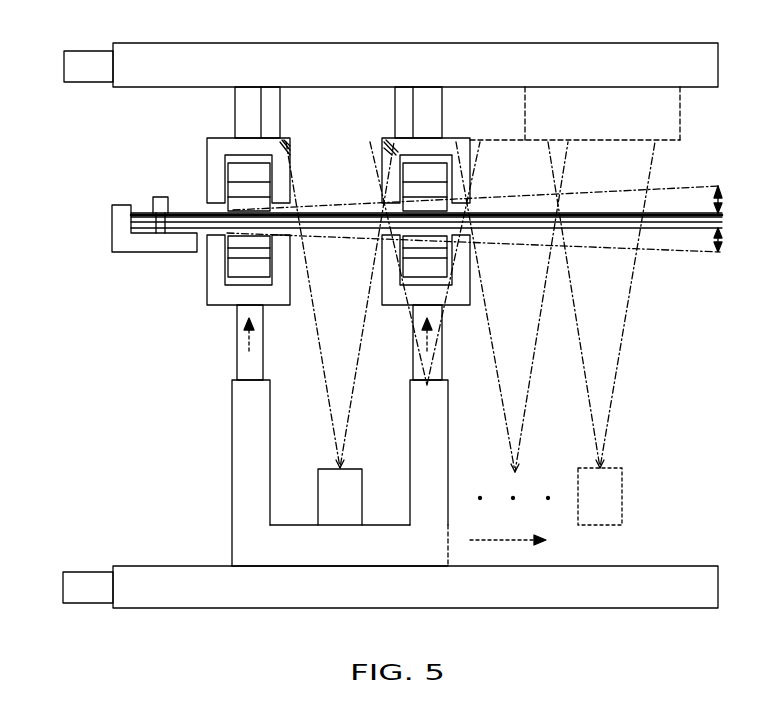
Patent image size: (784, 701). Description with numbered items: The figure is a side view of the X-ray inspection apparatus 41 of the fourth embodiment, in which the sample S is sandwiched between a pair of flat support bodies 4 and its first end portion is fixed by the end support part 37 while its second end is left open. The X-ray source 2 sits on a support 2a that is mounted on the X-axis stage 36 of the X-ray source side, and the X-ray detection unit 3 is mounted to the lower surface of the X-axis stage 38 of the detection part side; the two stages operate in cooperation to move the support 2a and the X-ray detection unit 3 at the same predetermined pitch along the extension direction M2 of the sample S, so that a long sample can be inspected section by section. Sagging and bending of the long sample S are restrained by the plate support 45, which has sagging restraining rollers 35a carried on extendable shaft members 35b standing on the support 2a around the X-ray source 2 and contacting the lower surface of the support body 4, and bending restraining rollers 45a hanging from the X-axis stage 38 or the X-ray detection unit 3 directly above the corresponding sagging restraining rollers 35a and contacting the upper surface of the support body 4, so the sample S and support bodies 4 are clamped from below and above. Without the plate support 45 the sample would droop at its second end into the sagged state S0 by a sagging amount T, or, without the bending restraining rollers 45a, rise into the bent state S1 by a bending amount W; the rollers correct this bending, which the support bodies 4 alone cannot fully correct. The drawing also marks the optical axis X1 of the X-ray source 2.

The X-ray source 2 is at (318, 497).
The support of the X-ray source 2a is at (232, 545).
The X-ray detection unit 3 is at (278, 116).
The support bodies 4 is at (712, 194).
The X-axis stage of the X-ray source side 36 is at (180, 566).
The end support part 37 is at (127, 205).
The X-axis stage of the detection part side 38 is at (130, 87).
The X-ray inspection apparatus 41 is at (727, 128).
The plate support 45 is at (216, 358).
The bending restraining rollers 45a is at (228, 172).
The sagging restraining rollers 35a is at (228, 270).
The extendable shaft members 35b is at (232, 450).
The optical axis X1 is at (362, 375).
The extension direction M2 is at (490, 540).
The bending amount W is at (478, 191).
The sample S is at (676, 190).
The sagged state S0 is at (673, 254).
The bent state S1 is at (678, 165).
The sagging amount T is at (722, 255).